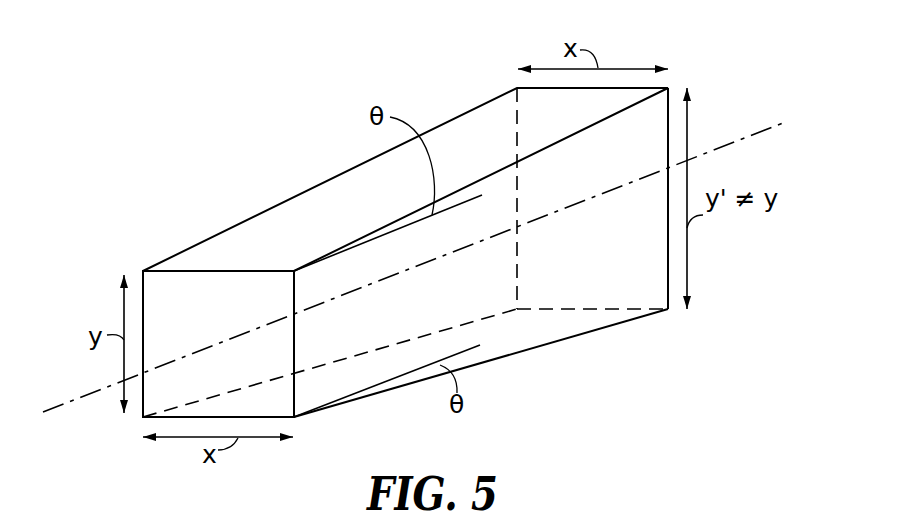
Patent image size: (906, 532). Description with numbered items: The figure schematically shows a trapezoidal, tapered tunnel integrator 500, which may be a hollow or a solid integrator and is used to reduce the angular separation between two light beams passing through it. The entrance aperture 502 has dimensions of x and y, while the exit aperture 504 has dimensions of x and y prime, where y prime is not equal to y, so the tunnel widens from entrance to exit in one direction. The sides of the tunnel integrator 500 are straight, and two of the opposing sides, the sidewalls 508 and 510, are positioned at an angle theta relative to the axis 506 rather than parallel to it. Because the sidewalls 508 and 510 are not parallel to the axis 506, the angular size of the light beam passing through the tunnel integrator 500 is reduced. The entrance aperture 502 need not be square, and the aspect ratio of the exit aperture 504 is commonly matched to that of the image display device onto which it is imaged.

The tunnel integrator 500 is at (413, 240).
The entrance aperture 502 is at (150, 278).
The exit aperture 504 is at (652, 113).
The axis 506 is at (96, 392).
The sidewall 508 is at (293, 195).
The sidewall 510 is at (527, 337).